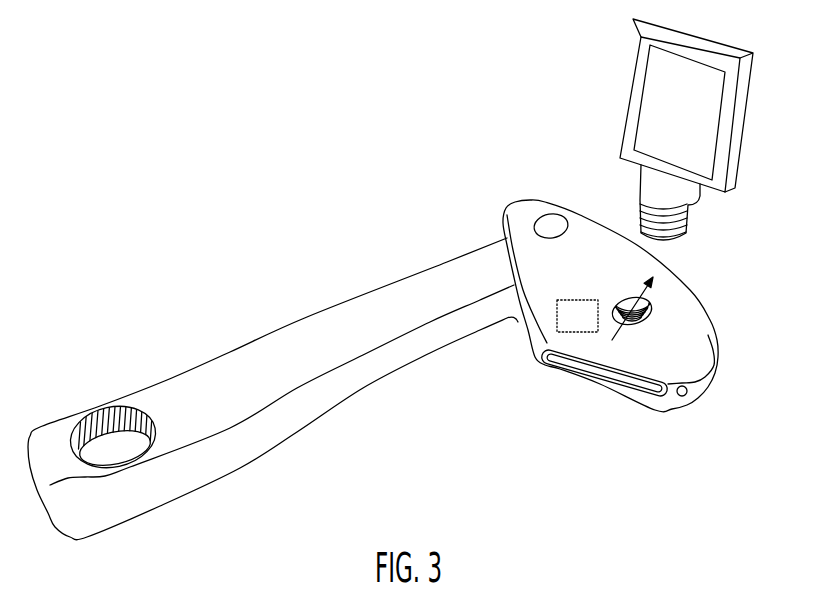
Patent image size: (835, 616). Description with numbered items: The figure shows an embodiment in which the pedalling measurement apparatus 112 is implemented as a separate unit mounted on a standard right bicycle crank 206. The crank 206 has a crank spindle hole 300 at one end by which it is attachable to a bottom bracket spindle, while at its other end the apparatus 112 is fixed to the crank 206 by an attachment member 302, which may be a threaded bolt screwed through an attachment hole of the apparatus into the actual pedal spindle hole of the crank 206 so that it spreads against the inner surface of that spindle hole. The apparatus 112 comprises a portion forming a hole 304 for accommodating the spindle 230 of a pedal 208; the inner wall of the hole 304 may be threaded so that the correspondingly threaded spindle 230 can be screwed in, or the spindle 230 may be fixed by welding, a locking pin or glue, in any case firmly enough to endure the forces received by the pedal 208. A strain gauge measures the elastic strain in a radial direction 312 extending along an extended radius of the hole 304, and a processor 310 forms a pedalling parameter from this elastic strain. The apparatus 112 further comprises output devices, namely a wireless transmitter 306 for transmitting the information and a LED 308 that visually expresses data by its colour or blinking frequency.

The apparatus 112 is at (533, 200).
The crank 206 is at (308, 318).
The pedal 208 is at (627, 77).
The spindle 230 is at (689, 231).
The crank spindle hole 300 is at (165, 413).
The attachment member 302 is at (568, 233).
The hole 304 is at (655, 333).
The wireless transmitter 306 is at (605, 386).
The LED 308 is at (684, 397).
The processor 310 is at (580, 300).
The radial direction 312 is at (642, 293).